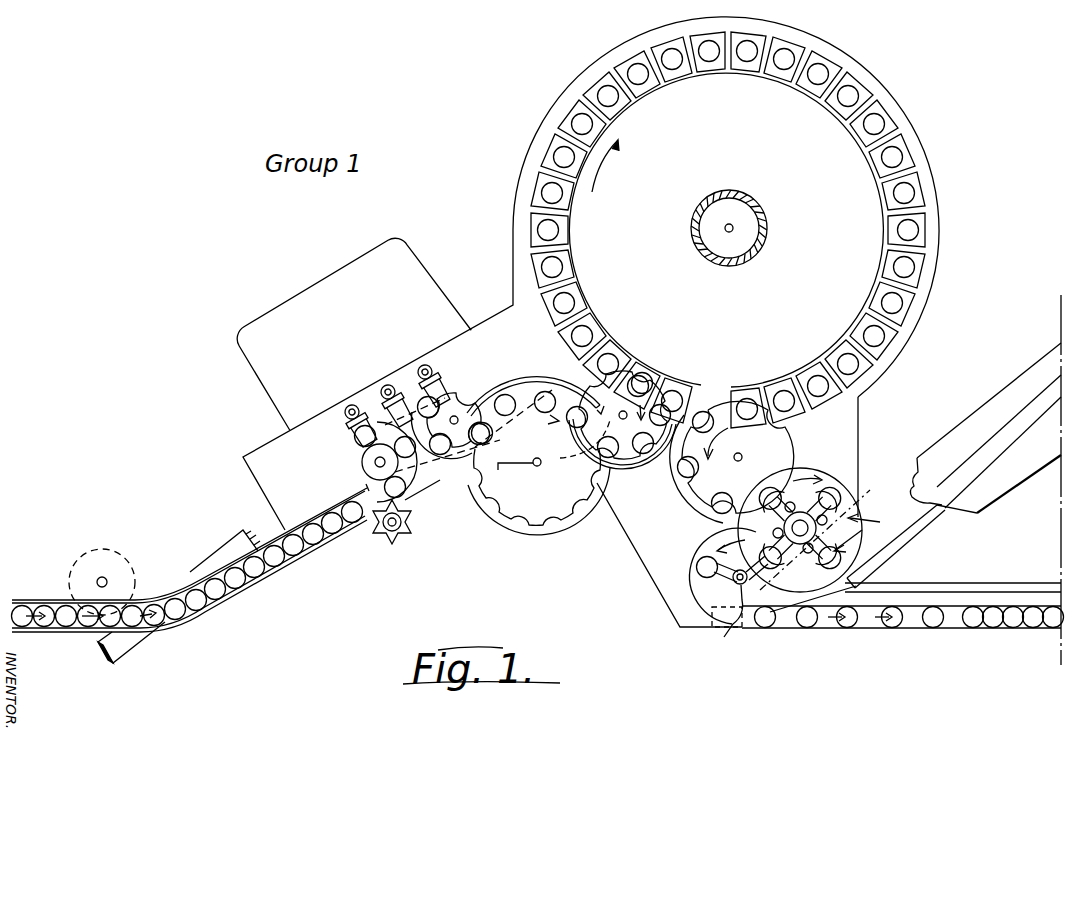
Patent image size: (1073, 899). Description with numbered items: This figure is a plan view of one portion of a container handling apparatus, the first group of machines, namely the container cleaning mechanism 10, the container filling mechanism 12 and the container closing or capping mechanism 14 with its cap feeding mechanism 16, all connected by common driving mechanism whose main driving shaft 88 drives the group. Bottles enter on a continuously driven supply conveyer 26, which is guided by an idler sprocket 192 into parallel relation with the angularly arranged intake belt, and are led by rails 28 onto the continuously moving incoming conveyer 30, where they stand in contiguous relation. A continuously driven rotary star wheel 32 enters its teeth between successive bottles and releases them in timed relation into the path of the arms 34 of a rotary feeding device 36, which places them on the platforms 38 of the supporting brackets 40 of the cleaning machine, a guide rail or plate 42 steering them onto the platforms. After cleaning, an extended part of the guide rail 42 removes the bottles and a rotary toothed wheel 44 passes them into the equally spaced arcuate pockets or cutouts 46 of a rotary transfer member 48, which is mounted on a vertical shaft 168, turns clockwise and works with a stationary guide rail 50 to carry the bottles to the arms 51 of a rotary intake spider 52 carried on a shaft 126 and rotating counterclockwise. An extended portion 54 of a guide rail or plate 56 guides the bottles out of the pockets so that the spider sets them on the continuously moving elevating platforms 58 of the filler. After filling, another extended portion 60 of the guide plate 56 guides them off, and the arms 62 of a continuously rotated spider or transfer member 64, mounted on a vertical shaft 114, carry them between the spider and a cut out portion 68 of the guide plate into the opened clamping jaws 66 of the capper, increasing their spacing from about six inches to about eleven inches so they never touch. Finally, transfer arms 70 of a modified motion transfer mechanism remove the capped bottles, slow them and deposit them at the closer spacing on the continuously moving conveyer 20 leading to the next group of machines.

The container cleaning mechanism 10 is at (262, 298).
The container filling mechanism 12 is at (702, 222).
The container closing or capping mechanism 14 is at (846, 466).
The cap feeding mechanism 16 is at (1015, 372).
The continuously moving conveyer 20 is at (953, 632).
The supply conveyer 26 is at (44, 608).
The rails 28 is at (252, 552).
The incoming conveyer 30 is at (160, 632).
The rotary star wheel 32 is at (395, 552).
The arms 34 is at (363, 483).
The rotary feeding device 36 is at (332, 461).
The platforms 38 is at (347, 441).
The supporting brackets 40 is at (340, 408).
The guide rail or plate 42 is at (426, 504).
The rotary toothed wheel 44 is at (473, 378).
The arcuate pockets or cutouts 46 is at (539, 486).
The rotary transfer member 48 is at (536, 486).
The stationary guide rail 50 is at (531, 386).
The arms 51 is at (632, 462).
The rotary intake spider 52 is at (637, 407).
The extended portion 54 is at (572, 458).
The guide rail or plate 56 is at (655, 570).
The elevating platforms 58 is at (535, 258).
The extended portion 60 is at (752, 428).
The arms 62 is at (772, 438).
The rotary spider or transfer member 64 is at (817, 510).
The clamping jaws 66 is at (817, 519).
The cut out portion 68 is at (705, 498).
The transfer arms 70 is at (702, 548).
The main driving shaft 88 is at (947, 583).
The vertical shaft 114 is at (778, 511).
The shaft 126 is at (626, 408).
The vertical shaft 168 is at (517, 481).
The idler sprocket 192 is at (96, 552).